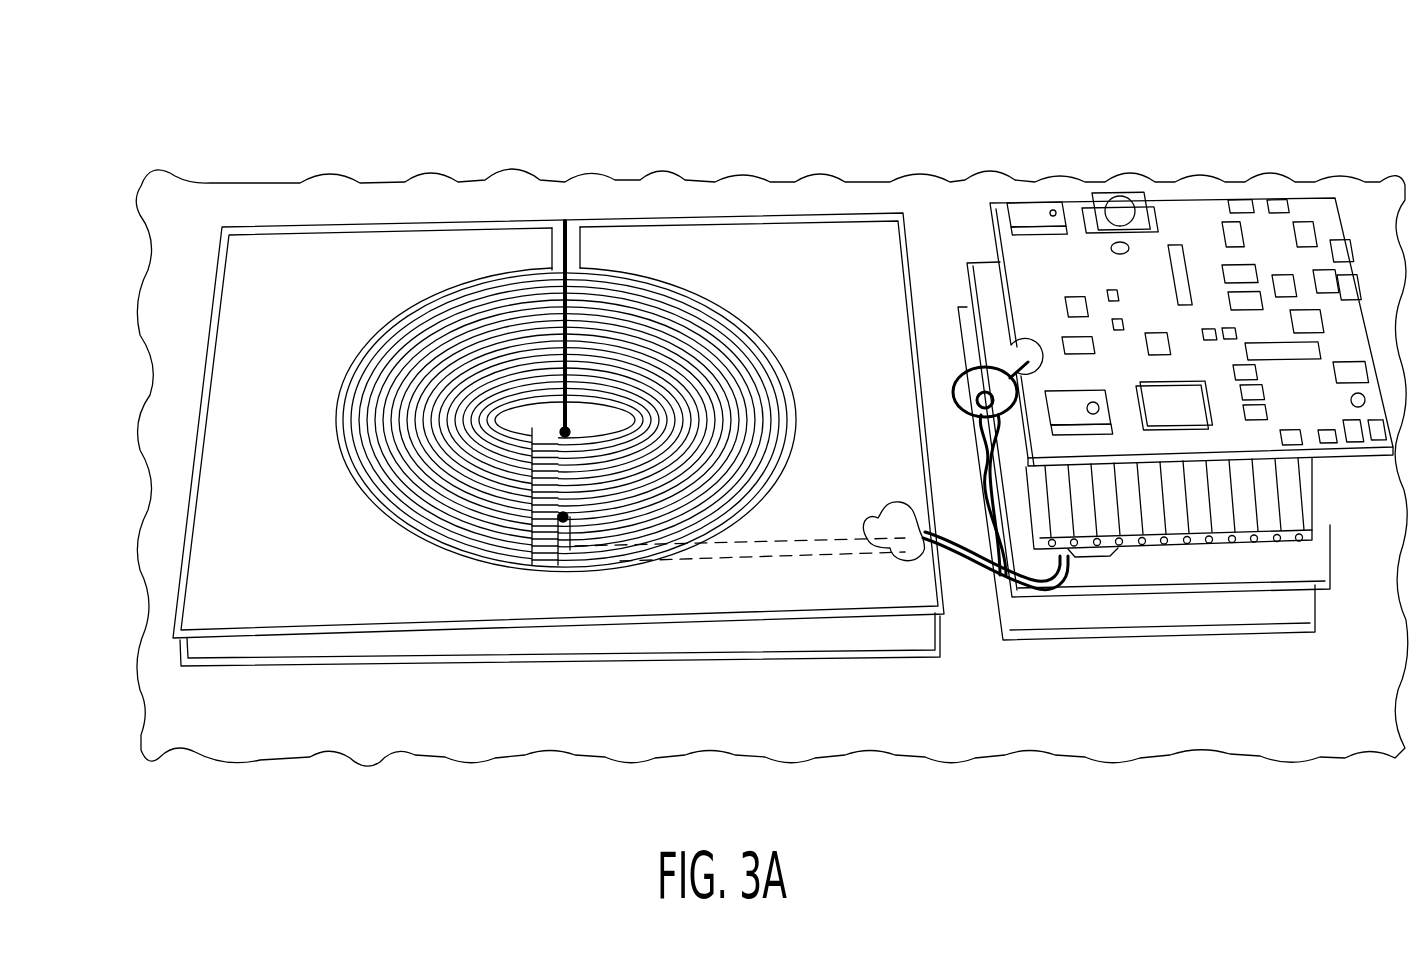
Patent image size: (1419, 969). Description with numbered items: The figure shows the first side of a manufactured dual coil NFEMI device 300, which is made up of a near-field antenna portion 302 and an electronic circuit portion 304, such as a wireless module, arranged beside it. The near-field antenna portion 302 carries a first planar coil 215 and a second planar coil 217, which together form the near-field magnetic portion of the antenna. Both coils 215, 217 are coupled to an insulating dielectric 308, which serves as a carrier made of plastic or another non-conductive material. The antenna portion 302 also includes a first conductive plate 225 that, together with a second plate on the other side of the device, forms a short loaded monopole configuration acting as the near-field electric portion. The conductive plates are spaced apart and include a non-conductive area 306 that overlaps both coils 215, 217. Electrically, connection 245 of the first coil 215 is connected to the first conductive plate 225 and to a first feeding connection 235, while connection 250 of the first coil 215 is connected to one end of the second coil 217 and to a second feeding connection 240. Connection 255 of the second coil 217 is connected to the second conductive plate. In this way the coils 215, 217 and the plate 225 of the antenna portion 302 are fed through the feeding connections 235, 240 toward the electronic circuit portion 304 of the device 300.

The dual coil NFEMI device 300 is at (136, 98).
The near-field antenna portion 302 is at (916, 215).
The electronic circuit portion 304 is at (1367, 215).
The connection of the second coil 255 is at (565, 222).
The first conductive plate 225 is at (304, 285).
The first feeding connection 235 is at (890, 503).
The second feeding connection 240 is at (814, 543).
The second planar coil 217 is at (527, 470).
The first planar coil 215 is at (528, 537).
The connection of the first coil 250 is at (563, 517).
The connection of the first coil 245 is at (633, 553).
The non-conductive area 306 is at (607, 413).
The insulating dielectric 308 is at (1138, 652).